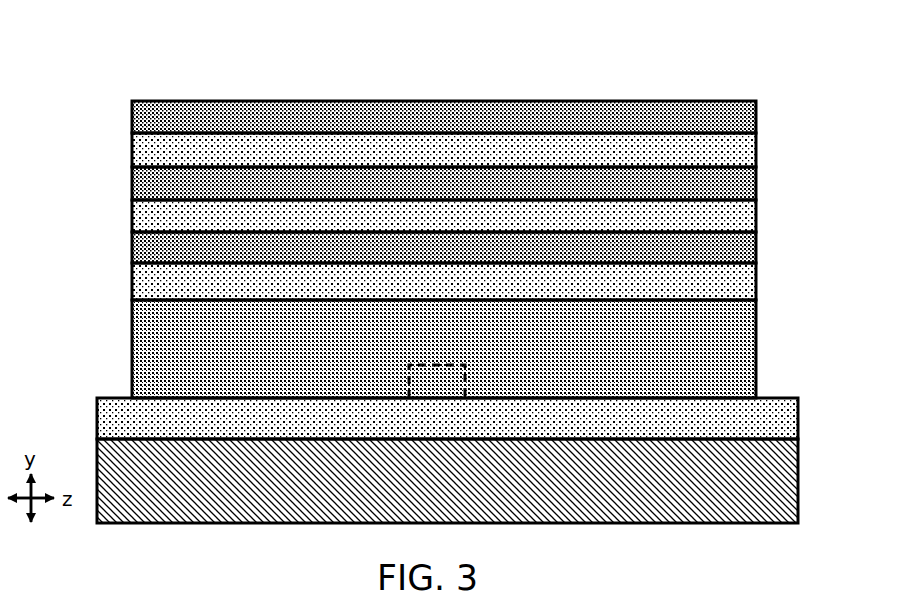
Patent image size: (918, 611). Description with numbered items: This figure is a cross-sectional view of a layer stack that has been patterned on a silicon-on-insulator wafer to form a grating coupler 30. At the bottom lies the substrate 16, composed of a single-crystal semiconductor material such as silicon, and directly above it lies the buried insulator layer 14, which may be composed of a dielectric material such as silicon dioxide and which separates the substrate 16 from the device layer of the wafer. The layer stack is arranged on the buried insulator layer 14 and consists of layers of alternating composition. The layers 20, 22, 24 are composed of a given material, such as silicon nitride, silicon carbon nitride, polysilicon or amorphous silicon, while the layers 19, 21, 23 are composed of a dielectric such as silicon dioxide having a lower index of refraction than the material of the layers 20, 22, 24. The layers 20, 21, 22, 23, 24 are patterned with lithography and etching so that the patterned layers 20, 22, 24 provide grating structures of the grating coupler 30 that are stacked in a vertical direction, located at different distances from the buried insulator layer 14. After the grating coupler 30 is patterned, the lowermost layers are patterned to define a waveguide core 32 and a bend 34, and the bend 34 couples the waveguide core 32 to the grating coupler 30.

The grating coupler 30 is at (112, 70).
The layer 24 is at (155, 121).
The layer 23 is at (720, 153).
The layer 22 is at (155, 186).
The layer 21 is at (720, 222).
The layer 20 is at (155, 250).
The layer 19 is at (720, 287).
The bend 34 is at (162, 355).
The waveguide core 32 is at (465, 372).
The buried insulator layer 14 is at (760, 422).
The substrate 16 is at (760, 494).